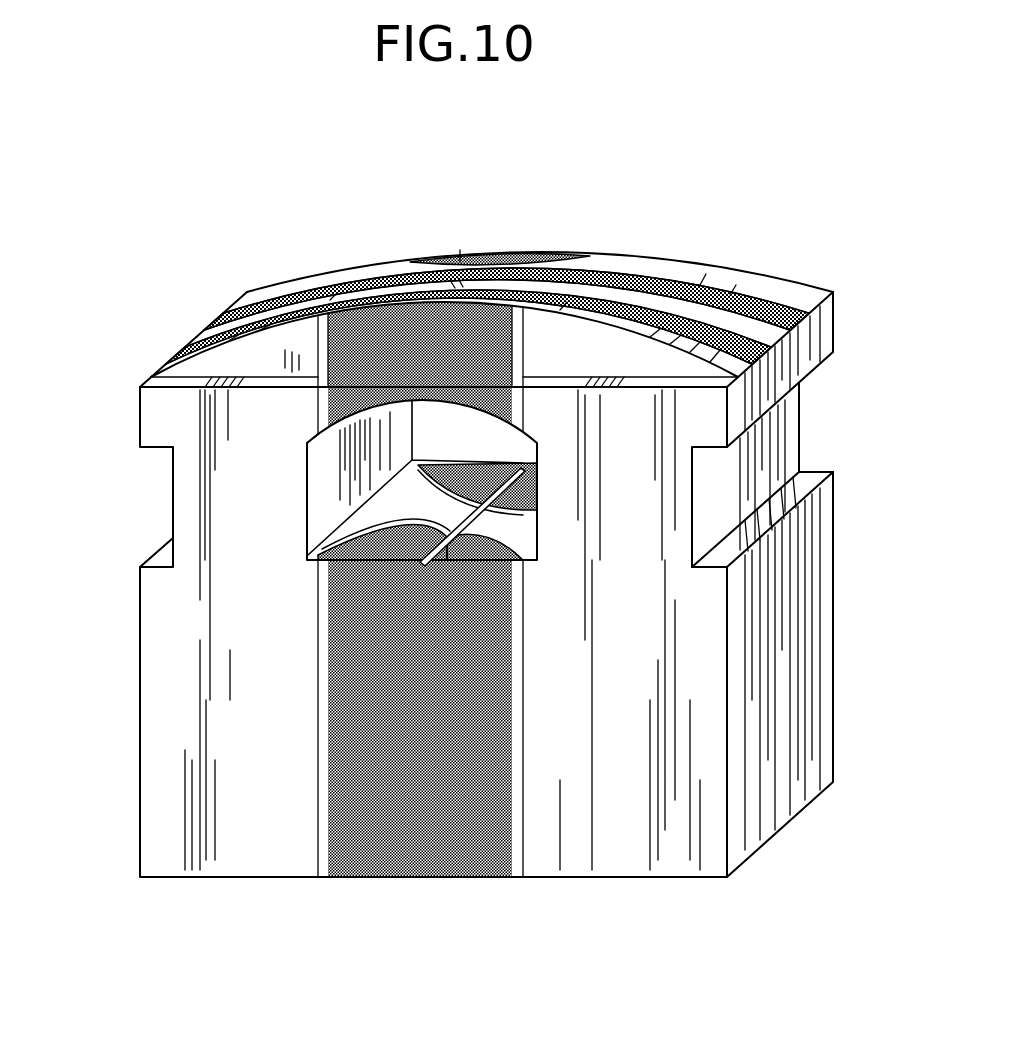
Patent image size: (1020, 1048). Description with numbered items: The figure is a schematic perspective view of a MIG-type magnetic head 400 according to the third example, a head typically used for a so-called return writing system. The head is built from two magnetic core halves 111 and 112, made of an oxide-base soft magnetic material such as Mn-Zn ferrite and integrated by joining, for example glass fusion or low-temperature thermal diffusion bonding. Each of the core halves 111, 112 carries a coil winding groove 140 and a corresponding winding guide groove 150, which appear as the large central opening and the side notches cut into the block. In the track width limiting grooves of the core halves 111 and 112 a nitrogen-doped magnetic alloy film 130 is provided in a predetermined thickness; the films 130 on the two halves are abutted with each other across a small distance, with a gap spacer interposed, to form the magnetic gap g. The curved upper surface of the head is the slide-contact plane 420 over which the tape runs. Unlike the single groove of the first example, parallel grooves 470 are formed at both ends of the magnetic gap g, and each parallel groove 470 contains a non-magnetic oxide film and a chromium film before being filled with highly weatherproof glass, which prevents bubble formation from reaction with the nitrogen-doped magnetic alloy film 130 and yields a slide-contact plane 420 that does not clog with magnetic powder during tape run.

The MIG-type magnetic head 400 is at (805, 185).
The slide-contact plane 420 is at (700, 270).
The parallel grooves 470 is at (230, 308).
The nitrogen-doped magnetic alloy film 130 is at (350, 317).
The magnetic gap g is at (460, 257).
The winding guide grooves 150 is at (173, 482).
The coil winding grooves 140 is at (312, 533).
The magnetic core half 111 is at (812, 720).
The magnetic core half 112 is at (150, 797).